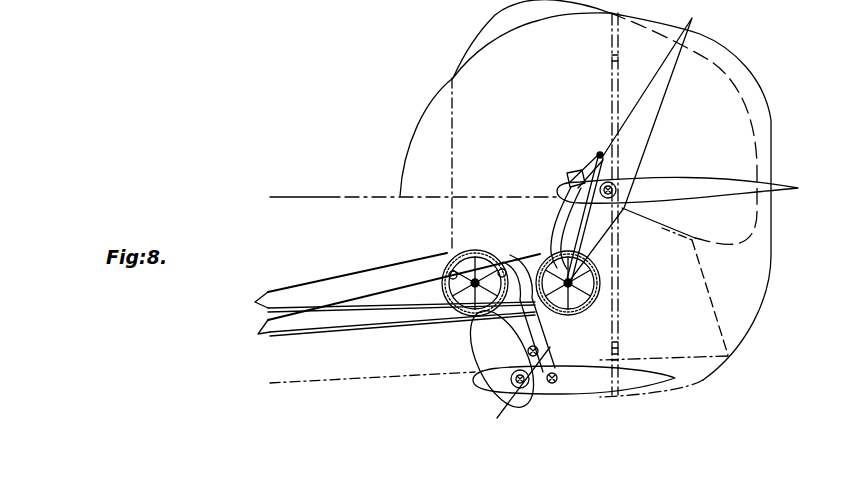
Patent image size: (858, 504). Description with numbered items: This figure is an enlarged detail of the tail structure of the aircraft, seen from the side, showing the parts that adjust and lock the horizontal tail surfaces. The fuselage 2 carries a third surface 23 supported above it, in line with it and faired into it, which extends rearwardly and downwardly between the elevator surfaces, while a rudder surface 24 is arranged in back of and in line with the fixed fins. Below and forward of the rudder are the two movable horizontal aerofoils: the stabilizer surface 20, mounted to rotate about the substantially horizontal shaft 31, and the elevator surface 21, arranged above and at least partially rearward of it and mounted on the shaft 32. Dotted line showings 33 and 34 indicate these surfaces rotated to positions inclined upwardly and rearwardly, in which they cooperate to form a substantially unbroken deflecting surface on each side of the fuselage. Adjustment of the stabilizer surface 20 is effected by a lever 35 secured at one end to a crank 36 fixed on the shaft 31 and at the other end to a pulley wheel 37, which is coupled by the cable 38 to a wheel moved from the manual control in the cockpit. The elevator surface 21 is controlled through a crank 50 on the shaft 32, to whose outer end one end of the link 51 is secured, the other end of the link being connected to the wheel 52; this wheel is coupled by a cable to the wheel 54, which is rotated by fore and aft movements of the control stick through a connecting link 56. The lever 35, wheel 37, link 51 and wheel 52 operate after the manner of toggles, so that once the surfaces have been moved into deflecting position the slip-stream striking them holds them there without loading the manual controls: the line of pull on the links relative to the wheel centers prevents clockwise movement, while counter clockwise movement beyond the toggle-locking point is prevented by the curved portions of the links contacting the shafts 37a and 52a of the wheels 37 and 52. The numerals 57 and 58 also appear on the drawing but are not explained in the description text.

The fuselage 2 is at (292, 196).
The stabilizer air-surface 20 is at (602, 382).
The elevator air-surface 21 is at (707, 184).
The third surface 23 is at (415, 133).
The rudder surface 24 is at (755, 62).
The shaft 31 is at (511, 386).
The shaft 32 is at (619, 191).
The dotted line showing of surface 20 33 is at (258, 334).
The dotted line showing of surface 21 34 is at (645, 131).
The lever 35 is at (526, 331).
The crank 36 is at (550, 390).
The pulley wheel 37 is at (447, 292).
The shaft of wheel 37 37a is at (462, 321).
The cable 38 is at (256, 302).
The crank 50 is at (614, 172).
The link 51 is at (560, 211).
The wheel 52 is at (601, 288).
The shaft of wheel 52 52a is at (593, 298).
The wheel 54 is at (490, 0).
The connecting link 56 is at (355, 6).
The member 57 is at (309, 7).
The member 58 is at (843, 5).